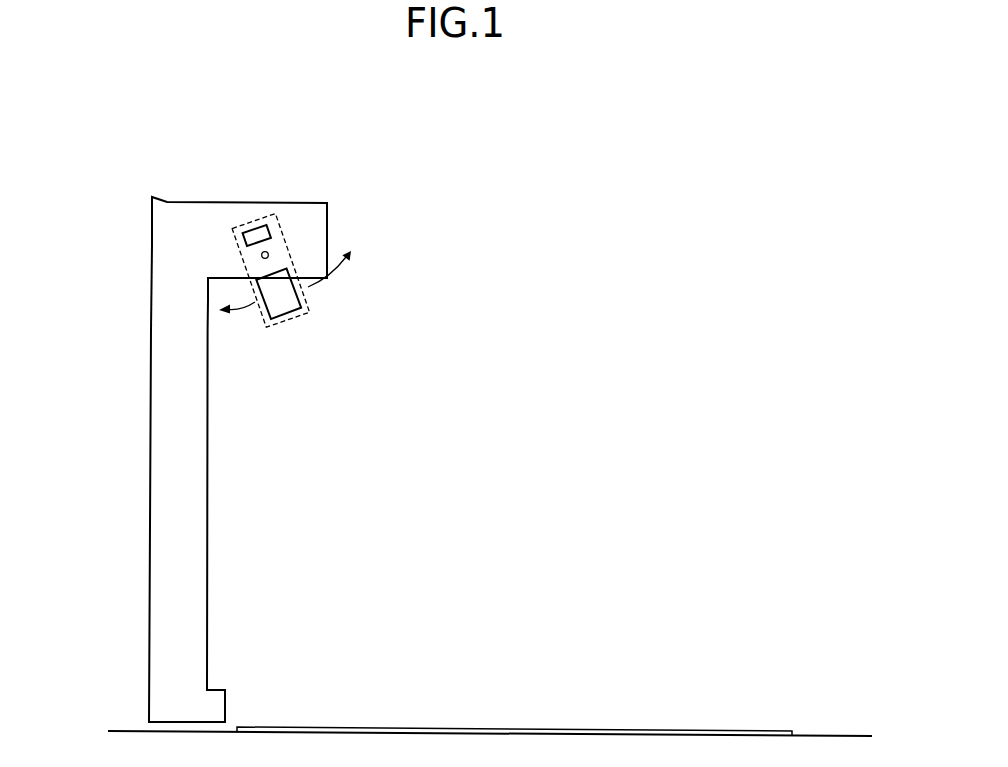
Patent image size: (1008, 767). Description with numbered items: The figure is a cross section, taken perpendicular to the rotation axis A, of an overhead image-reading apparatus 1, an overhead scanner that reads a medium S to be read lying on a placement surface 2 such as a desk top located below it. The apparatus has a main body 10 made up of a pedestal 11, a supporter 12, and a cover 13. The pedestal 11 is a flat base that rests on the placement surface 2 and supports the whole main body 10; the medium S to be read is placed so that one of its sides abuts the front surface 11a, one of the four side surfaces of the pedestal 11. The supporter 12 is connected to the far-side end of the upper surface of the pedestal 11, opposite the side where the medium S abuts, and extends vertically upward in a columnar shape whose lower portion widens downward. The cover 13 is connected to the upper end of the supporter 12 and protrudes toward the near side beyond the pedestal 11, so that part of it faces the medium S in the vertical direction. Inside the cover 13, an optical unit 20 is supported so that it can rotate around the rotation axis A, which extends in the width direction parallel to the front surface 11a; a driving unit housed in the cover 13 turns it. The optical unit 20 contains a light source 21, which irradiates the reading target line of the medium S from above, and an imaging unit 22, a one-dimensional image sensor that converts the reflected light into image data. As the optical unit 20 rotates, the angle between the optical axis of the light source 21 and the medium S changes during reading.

The overhead image-reading apparatus 1 is at (159, 155).
The main body 10 is at (95, 222).
The pedestal 11 is at (147, 695).
The front surface 11a is at (225, 698).
The supporter 12 is at (152, 265).
The cover 13 is at (188, 202).
The optical unit 20 is at (305, 310).
The light source 21 is at (287, 268).
The imaging unit 22 is at (258, 222).
The rotation axis A is at (266, 251).
The medium to be read S is at (785, 728).
The placement surface 2 is at (842, 735).